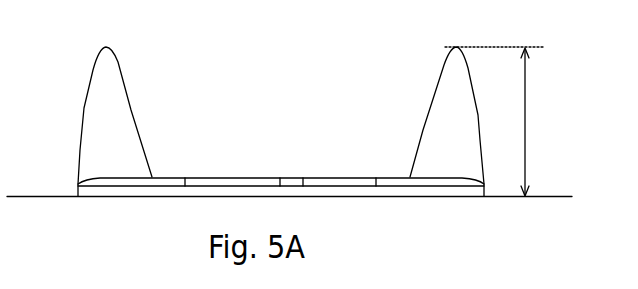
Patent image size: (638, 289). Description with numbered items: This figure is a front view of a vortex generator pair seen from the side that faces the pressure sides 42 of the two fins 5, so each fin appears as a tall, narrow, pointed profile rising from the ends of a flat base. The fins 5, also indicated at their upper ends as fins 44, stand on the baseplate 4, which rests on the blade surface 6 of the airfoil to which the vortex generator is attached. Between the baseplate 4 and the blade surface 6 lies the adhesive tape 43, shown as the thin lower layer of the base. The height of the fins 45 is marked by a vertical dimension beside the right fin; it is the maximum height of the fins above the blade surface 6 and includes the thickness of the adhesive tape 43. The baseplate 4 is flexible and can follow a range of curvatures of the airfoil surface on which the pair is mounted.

The baseplate 4 is at (281, 150).
The fins 5 is at (118, 101).
The blade surface 6 is at (27, 197).
The pressure sides 42 is at (282, 100).
The adhesive tape 43 is at (303, 178).
The fins 44 is at (282, 100).
The height of the fins 45 is at (499, 121).